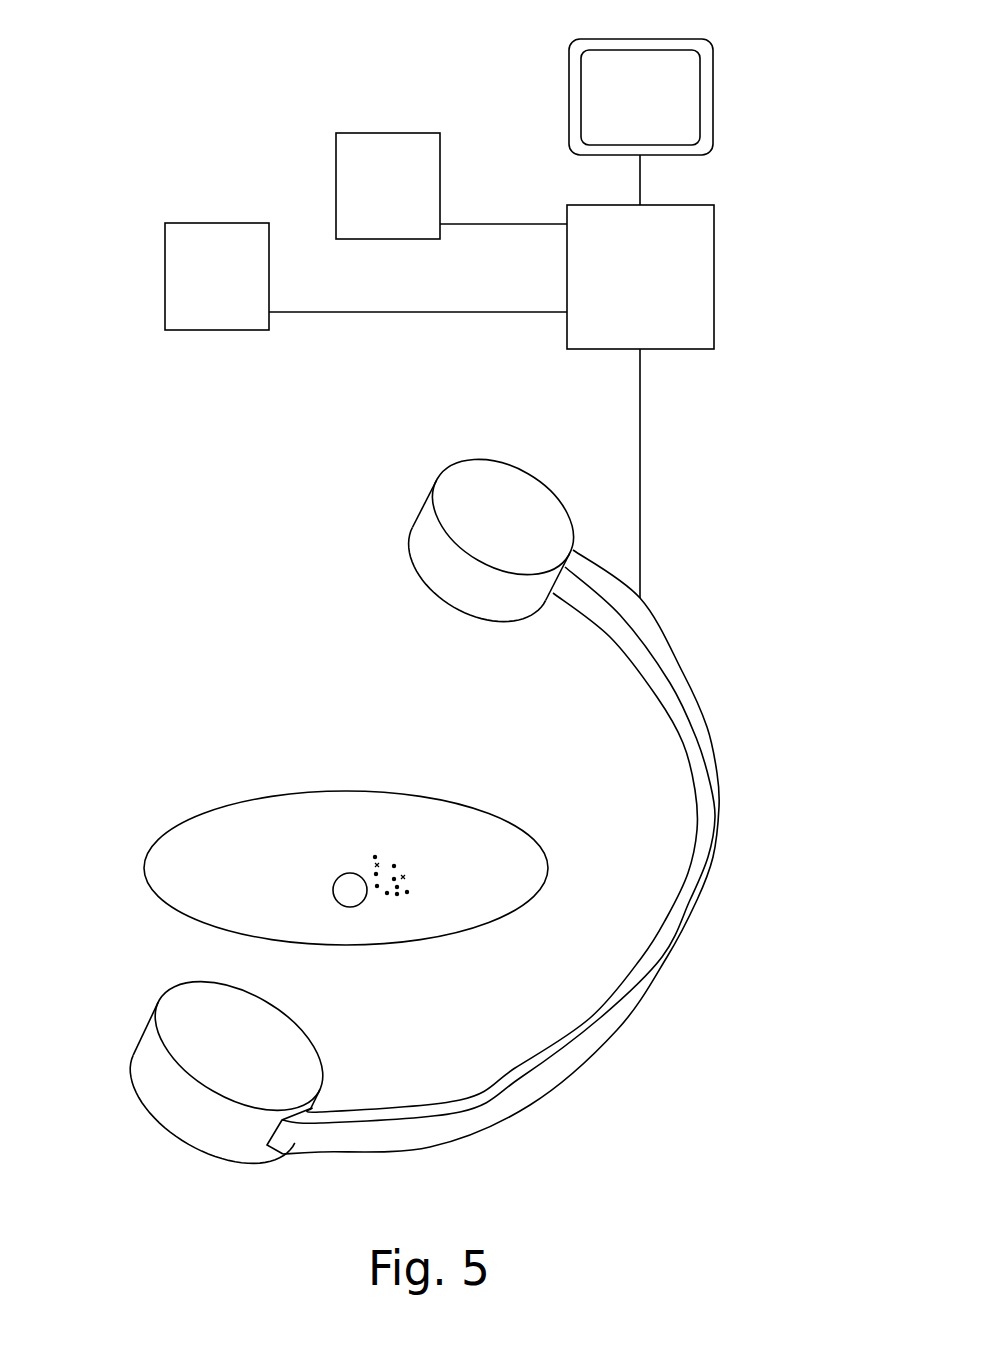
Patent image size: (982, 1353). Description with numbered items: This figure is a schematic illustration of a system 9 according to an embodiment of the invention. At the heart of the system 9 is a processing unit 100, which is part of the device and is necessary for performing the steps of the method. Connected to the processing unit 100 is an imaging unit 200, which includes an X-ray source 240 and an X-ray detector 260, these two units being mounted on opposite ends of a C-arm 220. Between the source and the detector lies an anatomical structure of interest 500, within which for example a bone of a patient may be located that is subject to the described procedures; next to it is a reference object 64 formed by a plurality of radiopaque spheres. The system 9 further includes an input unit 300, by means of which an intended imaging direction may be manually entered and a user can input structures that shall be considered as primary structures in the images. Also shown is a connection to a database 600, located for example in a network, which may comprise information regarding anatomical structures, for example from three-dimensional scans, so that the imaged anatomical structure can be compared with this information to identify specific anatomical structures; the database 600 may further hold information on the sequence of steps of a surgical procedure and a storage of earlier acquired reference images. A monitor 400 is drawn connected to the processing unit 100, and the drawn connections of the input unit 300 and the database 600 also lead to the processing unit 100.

The system 9 is at (180, 541).
The reference object 64 is at (399, 912).
The processing unit 100 is at (693, 271).
The imaging unit 200 is at (522, 852).
The C-arm 220 is at (627, 1005).
The X-ray source 240 is at (182, 1120).
The X-ray detector 260 is at (525, 602).
The input unit 300 is at (391, 151).
The monitor 400 is at (680, 99).
The anatomical structure of interest 500 is at (357, 924).
The database 600 is at (178, 277).